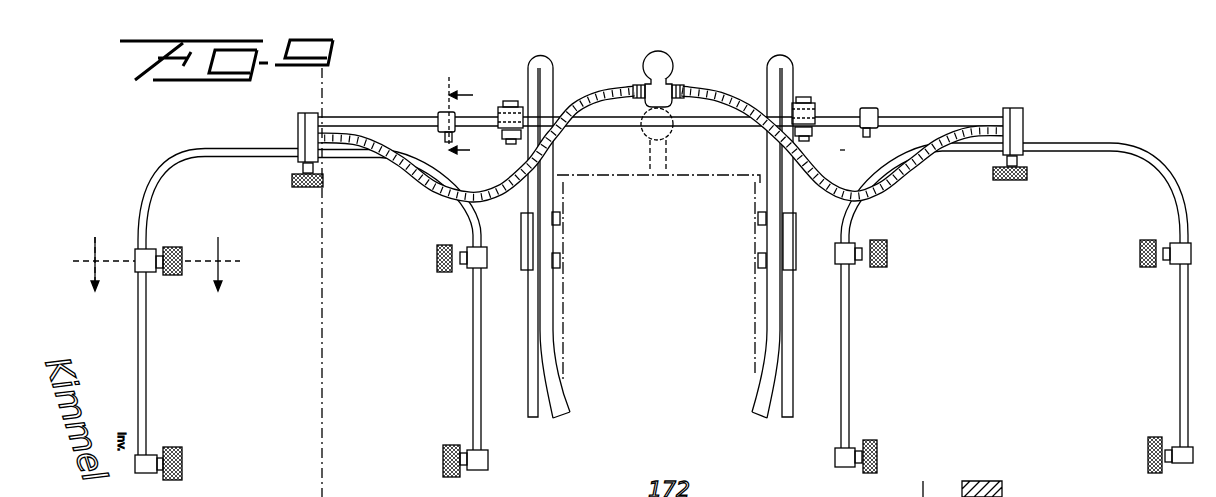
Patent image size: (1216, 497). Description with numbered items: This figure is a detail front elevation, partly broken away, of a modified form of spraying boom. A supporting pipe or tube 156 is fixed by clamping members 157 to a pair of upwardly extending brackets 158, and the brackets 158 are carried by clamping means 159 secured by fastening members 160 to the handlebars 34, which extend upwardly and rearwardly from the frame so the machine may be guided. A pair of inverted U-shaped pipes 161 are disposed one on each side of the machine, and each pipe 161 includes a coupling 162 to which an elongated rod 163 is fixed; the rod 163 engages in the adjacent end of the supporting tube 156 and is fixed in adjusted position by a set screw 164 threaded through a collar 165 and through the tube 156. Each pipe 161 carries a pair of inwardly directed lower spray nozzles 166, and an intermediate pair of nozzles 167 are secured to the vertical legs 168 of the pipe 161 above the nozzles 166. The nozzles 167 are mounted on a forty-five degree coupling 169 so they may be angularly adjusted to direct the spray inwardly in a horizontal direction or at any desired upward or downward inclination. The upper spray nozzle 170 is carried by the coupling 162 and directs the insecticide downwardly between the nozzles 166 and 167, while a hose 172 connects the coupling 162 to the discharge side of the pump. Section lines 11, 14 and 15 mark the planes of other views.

The section line 11- 11 is at (287, 83).
The section line 14- 14 is at (160, 260).
The section line 15- 15 is at (473, 104).
The handlebars 34 is at (768, 70).
The supporting pipe or tube 156 is at (838, 117).
The clamping members 157 is at (810, 107).
The brackets 158 is at (787, 170).
The clamping means 159 is at (528, 240).
The fastening members 160 is at (760, 222).
The inverted U-shaped pipes 161 is at (372, 151).
The coupling 162 is at (298, 127).
The elongated rod 163 is at (953, 113).
The set screw 164 is at (841, 157).
The collar 165 is at (858, 137).
The lower spray nozzles 166 is at (183, 452).
The intermediate nozzles 167 is at (171, 246).
The vertical legs 168 is at (472, 414).
The 45° coupling 169 is at (137, 267).
The upper spray nozzle 170 is at (292, 179).
The hose 172 is at (420, 182).